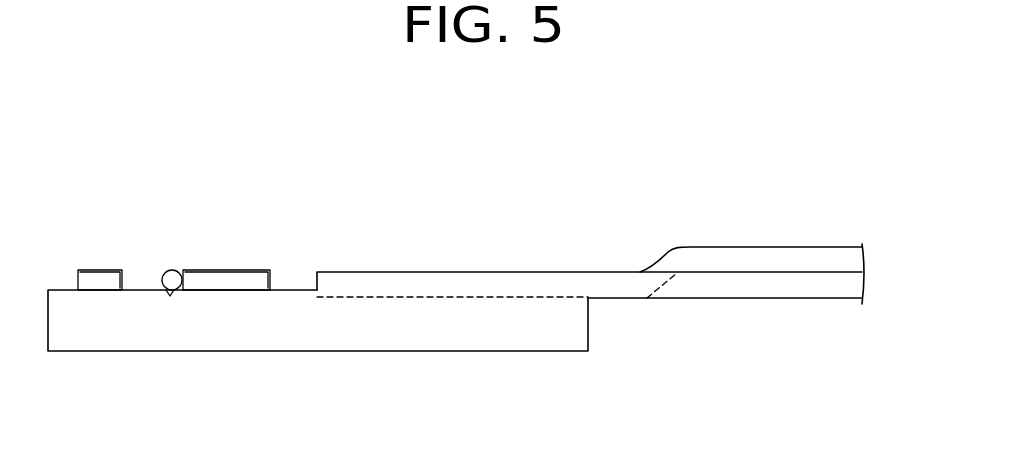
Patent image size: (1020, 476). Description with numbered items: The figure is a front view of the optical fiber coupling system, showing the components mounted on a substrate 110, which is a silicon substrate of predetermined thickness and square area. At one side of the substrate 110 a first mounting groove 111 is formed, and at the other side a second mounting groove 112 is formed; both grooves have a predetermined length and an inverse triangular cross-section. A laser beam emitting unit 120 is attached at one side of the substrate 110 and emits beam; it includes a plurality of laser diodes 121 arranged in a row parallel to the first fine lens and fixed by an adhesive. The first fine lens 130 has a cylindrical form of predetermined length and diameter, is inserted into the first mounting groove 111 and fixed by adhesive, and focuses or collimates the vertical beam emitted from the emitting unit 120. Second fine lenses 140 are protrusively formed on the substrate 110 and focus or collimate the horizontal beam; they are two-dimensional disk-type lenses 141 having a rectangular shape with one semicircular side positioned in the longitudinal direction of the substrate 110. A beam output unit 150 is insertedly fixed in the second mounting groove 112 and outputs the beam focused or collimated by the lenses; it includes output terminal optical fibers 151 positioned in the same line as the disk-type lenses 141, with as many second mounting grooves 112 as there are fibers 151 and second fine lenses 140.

The substrate 110 is at (578, 363).
The first mounting groove 111 is at (170, 296).
The second mounting groove 112 is at (452, 298).
The laser beam emitting unit 120 is at (113, 266).
The laser diode 121 is at (90, 277).
The first fine lens 130 is at (175, 264).
The second fine lens 140 is at (268, 264).
The disk-type lens 141 is at (244, 278).
The beam output unit 150 is at (700, 242).
The output terminal optical fiber 151 is at (803, 255).